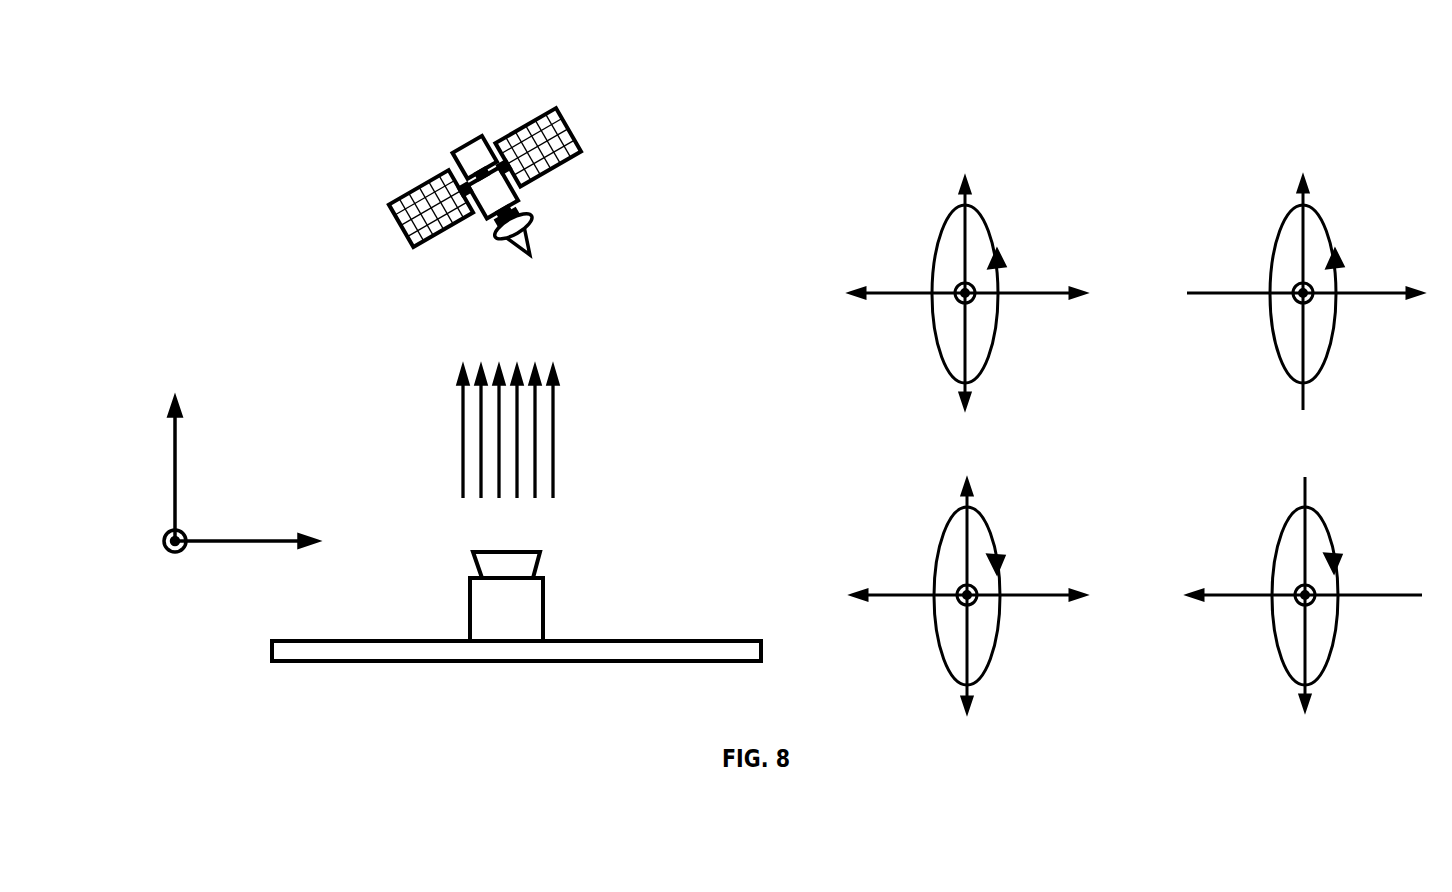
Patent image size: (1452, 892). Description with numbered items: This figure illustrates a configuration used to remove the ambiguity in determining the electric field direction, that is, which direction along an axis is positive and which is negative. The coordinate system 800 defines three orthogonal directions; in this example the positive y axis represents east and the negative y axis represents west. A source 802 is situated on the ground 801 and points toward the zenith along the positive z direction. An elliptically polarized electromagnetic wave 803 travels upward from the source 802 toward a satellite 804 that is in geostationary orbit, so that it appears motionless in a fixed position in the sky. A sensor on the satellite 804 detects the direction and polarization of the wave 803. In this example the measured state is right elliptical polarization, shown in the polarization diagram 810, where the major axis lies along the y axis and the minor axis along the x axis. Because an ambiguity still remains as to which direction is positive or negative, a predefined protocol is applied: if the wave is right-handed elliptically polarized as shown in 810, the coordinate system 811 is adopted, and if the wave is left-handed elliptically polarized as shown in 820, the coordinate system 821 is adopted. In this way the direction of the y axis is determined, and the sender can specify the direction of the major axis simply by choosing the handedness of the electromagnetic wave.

The coordinate system 800 is at (173, 470).
The ground 801 is at (316, 640).
The source 802 is at (545, 605).
The elliptically polarized electromagnetic wave 803 is at (555, 436).
The satellite 804 is at (410, 190).
The right elliptical polarization state 810 is at (973, 276).
The coordinate system adopted for right-handed polarization 811 is at (1313, 276).
The left-handed elliptical polarization state 820 is at (975, 578).
The coordinate system adopted for left-handed polarization 821 is at (1306, 610).